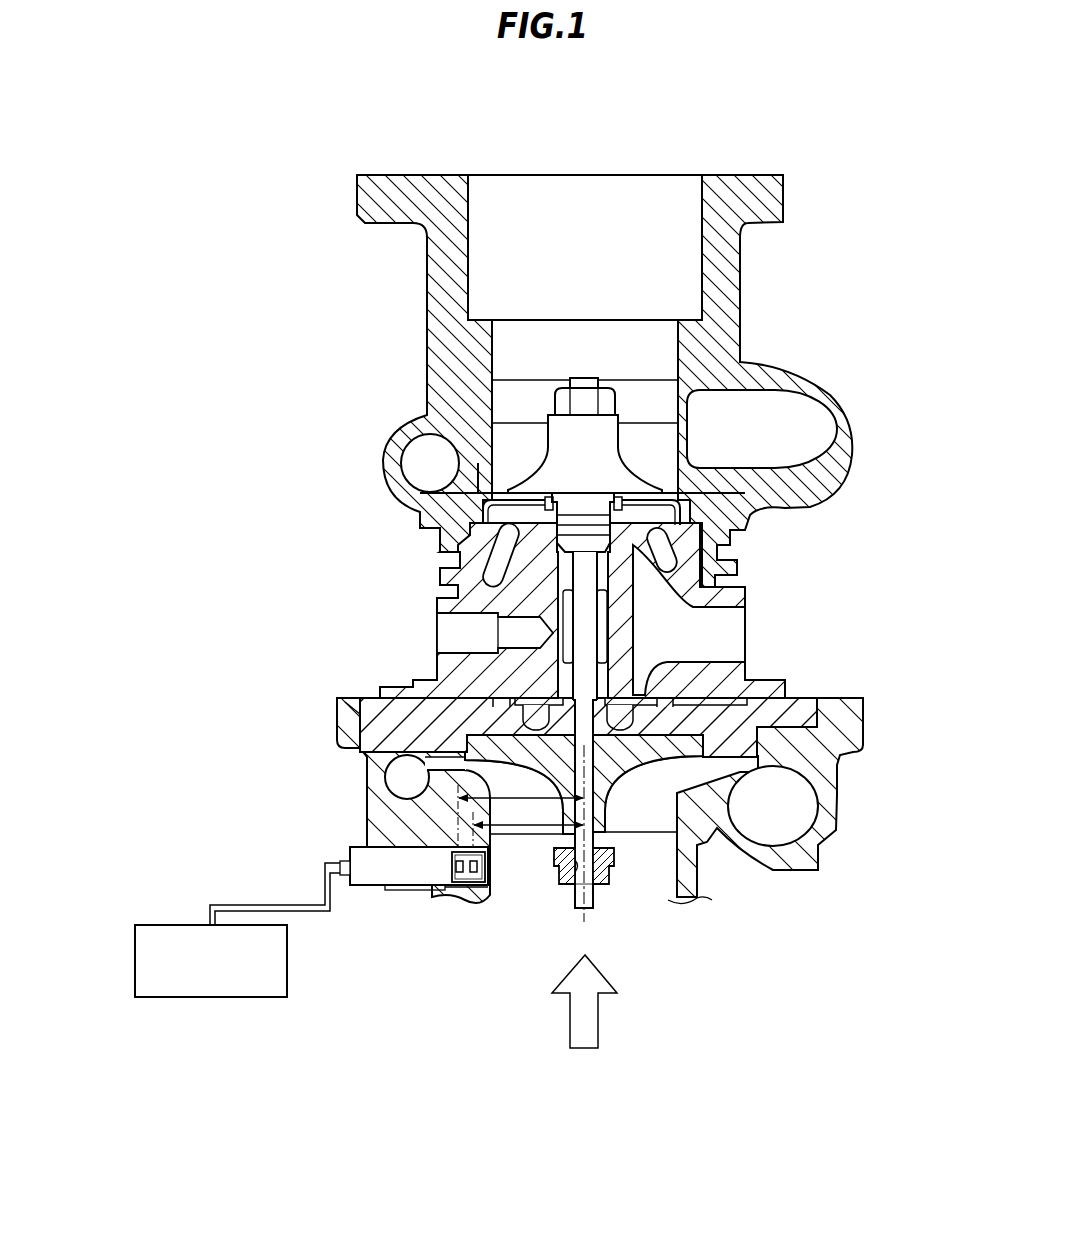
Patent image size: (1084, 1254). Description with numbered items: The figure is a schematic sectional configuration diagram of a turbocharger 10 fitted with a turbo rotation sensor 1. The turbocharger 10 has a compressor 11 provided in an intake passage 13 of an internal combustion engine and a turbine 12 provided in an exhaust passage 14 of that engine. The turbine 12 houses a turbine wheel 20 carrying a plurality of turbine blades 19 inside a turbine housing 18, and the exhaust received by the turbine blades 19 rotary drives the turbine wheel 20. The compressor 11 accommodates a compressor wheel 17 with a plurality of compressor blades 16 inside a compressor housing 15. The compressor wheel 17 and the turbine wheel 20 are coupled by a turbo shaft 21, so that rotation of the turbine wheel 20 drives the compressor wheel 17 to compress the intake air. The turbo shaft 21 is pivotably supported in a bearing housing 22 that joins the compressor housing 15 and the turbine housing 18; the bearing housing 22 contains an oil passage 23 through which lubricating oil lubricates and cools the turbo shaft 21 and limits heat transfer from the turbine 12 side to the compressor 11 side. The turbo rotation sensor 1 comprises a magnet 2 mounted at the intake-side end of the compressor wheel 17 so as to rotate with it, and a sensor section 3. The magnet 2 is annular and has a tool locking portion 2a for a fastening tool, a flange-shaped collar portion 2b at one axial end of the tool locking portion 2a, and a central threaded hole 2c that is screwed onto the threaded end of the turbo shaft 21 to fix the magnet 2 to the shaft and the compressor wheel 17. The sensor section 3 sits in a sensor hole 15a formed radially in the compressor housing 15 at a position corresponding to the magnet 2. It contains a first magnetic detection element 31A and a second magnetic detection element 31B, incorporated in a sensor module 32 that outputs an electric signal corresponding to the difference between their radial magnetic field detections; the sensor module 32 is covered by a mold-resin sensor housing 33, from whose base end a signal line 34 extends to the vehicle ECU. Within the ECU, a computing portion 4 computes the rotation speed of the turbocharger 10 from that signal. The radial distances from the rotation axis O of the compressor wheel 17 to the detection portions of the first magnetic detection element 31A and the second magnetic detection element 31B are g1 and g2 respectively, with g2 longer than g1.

The turbo rotation sensor 1 is at (397, 907).
The magnet 2 is at (568, 886).
The tool locking portion 2a is at (598, 890).
The collar portion 2b is at (616, 862).
The threaded hole 2c is at (578, 867).
The sensor section 3 is at (348, 874).
The computing portion 4 is at (209, 998).
The turbocharger 10 is at (320, 170).
The compressor 11 is at (348, 848).
The turbine 12 is at (375, 425).
The intake passage 13 is at (648, 900).
The exhaust passage 14 is at (662, 172).
The compressor housing 15 is at (365, 803).
The sensor hole 15a is at (458, 882).
The compressor blades 16 is at (645, 810).
The compressor wheel 17 is at (473, 732).
The turbine housing 18 is at (427, 383).
The turbine blades 19 is at (640, 455).
The turbine wheel 20 is at (500, 483).
The turbo shaft 21 is at (585, 677).
The bearing housing 22 is at (440, 602).
The oil passage 23 is at (725, 630).
The first magnetic detection element 31A is at (462, 874).
The second magnetic detection element 31B is at (474, 874).
The sensor module 32 is at (452, 860).
The sensor housing 33 is at (388, 877).
The signal line 34 is at (208, 920).
The rotation axis O is at (586, 912).
The distance g1 is at (528, 838).
The distance g2 is at (520, 825).